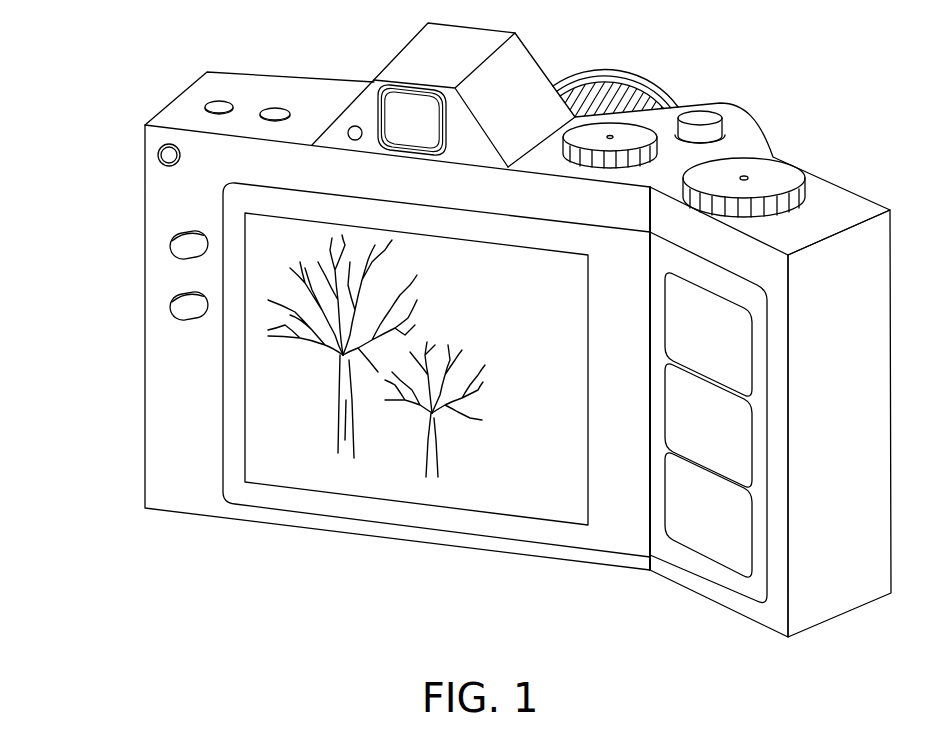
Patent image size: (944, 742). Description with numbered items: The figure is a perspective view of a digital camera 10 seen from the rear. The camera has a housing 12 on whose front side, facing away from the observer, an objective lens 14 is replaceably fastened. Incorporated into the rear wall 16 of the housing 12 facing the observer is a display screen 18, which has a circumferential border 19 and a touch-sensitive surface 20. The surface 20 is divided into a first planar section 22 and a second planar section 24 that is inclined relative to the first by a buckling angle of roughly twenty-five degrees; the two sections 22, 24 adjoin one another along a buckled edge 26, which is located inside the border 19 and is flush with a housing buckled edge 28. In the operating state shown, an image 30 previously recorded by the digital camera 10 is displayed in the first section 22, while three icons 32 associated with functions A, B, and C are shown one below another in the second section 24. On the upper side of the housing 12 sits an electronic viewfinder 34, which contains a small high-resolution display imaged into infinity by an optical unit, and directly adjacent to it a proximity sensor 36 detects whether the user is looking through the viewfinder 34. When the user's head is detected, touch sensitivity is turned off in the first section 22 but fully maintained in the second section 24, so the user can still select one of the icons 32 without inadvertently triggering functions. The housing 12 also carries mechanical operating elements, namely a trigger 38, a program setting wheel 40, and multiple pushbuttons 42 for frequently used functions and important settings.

The digital camera 10 is at (457, 360).
The housing 12 is at (832, 593).
The objective lens 14 is at (628, 93).
The rear wall 16 is at (158, 378).
The display screen 18 is at (221, 420).
The circumferential border 19 is at (292, 515).
The touch-sensitive surface 20 is at (513, 527).
The first planar section 22 is at (461, 541).
The second planar section 24 is at (735, 602).
The buckled edge 26 is at (650, 545).
The housing buckled edge 28 is at (662, 433).
The image 30 is at (358, 498).
The icons 32 is at (720, 555).
The electronic viewfinder 34 is at (439, 144).
The proximity sensor 36 is at (349, 138).
The trigger 38 is at (703, 120).
The program setting wheel 40 is at (780, 177).
The pushbuttons 42 is at (184, 248).